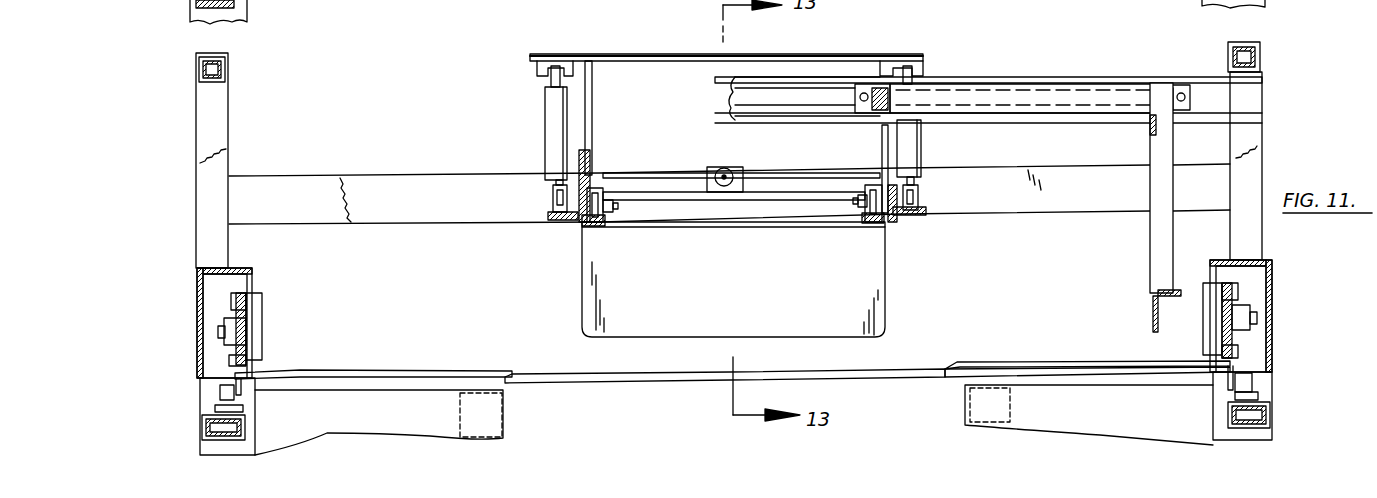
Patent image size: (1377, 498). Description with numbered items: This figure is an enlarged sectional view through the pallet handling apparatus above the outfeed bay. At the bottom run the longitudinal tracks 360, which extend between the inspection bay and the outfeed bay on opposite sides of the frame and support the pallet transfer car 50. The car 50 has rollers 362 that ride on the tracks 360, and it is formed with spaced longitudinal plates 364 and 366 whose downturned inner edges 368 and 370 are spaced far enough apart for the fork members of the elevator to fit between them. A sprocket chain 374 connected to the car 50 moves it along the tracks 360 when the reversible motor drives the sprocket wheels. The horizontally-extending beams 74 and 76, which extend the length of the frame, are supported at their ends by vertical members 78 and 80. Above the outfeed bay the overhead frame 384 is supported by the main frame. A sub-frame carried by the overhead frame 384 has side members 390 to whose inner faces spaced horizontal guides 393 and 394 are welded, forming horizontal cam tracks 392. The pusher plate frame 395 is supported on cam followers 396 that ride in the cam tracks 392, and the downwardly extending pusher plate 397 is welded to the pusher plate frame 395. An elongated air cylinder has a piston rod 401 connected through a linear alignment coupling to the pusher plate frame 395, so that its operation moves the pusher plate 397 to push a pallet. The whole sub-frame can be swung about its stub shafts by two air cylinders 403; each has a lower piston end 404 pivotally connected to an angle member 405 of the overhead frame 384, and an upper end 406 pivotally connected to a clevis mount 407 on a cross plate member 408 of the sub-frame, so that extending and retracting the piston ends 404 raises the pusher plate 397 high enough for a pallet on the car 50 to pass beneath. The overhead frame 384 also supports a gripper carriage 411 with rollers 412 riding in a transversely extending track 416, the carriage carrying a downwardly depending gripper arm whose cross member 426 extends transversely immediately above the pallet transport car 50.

The pallet transfer car 50 is at (412, 352).
The beam 74 is at (1270, 279).
The beam 76 is at (197, 280).
The vertical member 78 is at (188, 9).
The vertical member 80 is at (200, 440).
The longitudinal track 360 is at (215, 410).
The roller 362 is at (220, 393).
The longitudinal plate 364 is at (458, 371).
The longitudinal plate 366 is at (1038, 365).
The downturned inner edge 368 is at (512, 373).
The downturned inner edge 370 is at (950, 365).
The sprocket chain 374 is at (237, 300).
The overhead frame 384 is at (1266, 62).
The side member 390 is at (585, 152).
The horizontal cam track 392 is at (592, 226).
The horizontal guide 393 is at (595, 190).
The horizontal guide 394 is at (825, 78).
The pusher plate frame 395 is at (697, 221).
The cam follower 396 is at (612, 210).
The pusher plate 397 is at (870, 286).
The piston rod 401 is at (728, 170).
The air cylinder 403 is at (549, 120).
The lower piston end 404 is at (551, 196).
The angle member 405 is at (556, 222).
The upper end 406 is at (552, 80).
The clevis mount 407 is at (540, 69).
The cross plate member 408 is at (637, 54).
The gripper carriage 411 is at (1025, 80).
The roller 412 is at (848, 97).
The track 416 is at (800, 98).
The gripper arm cross member 426 is at (1153, 312).